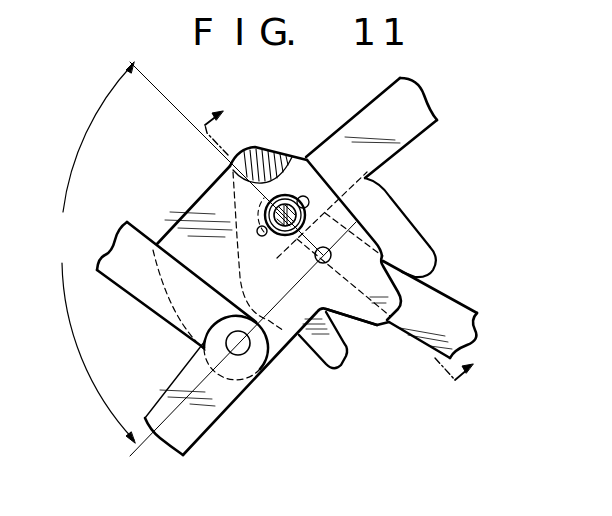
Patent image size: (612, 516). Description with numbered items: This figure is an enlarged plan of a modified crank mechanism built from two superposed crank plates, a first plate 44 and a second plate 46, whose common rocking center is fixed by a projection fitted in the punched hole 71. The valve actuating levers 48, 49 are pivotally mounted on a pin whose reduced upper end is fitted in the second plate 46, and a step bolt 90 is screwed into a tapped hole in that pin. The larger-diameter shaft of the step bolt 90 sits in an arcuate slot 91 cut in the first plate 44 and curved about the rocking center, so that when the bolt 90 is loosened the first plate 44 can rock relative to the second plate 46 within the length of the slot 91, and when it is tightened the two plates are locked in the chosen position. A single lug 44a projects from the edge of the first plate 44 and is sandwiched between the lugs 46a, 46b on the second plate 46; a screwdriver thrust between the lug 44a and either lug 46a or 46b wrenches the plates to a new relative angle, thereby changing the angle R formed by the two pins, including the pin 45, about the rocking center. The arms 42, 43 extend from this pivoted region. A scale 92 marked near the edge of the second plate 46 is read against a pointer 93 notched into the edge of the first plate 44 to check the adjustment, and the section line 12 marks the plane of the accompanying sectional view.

The section line 12 is at (355, 238).
The arm 42 is at (121, 284).
The arm 43 is at (210, 424).
The first plate 44 is at (277, 349).
The lug 44a is at (376, 324).
The pin 45 is at (251, 378).
The second plate 46 is at (389, 202).
The lug 46a is at (437, 250).
The lug 46b is at (333, 368).
The valve actuating lever 48 is at (457, 311).
The valve actuating lever 49 is at (370, 116).
The punched hole 71 is at (331, 255).
The step bolt 90 is at (291, 194).
The slot 91 is at (263, 237).
The scale 92 is at (262, 150).
The pointer 93 is at (232, 168).
The angle R is at (92, 252).